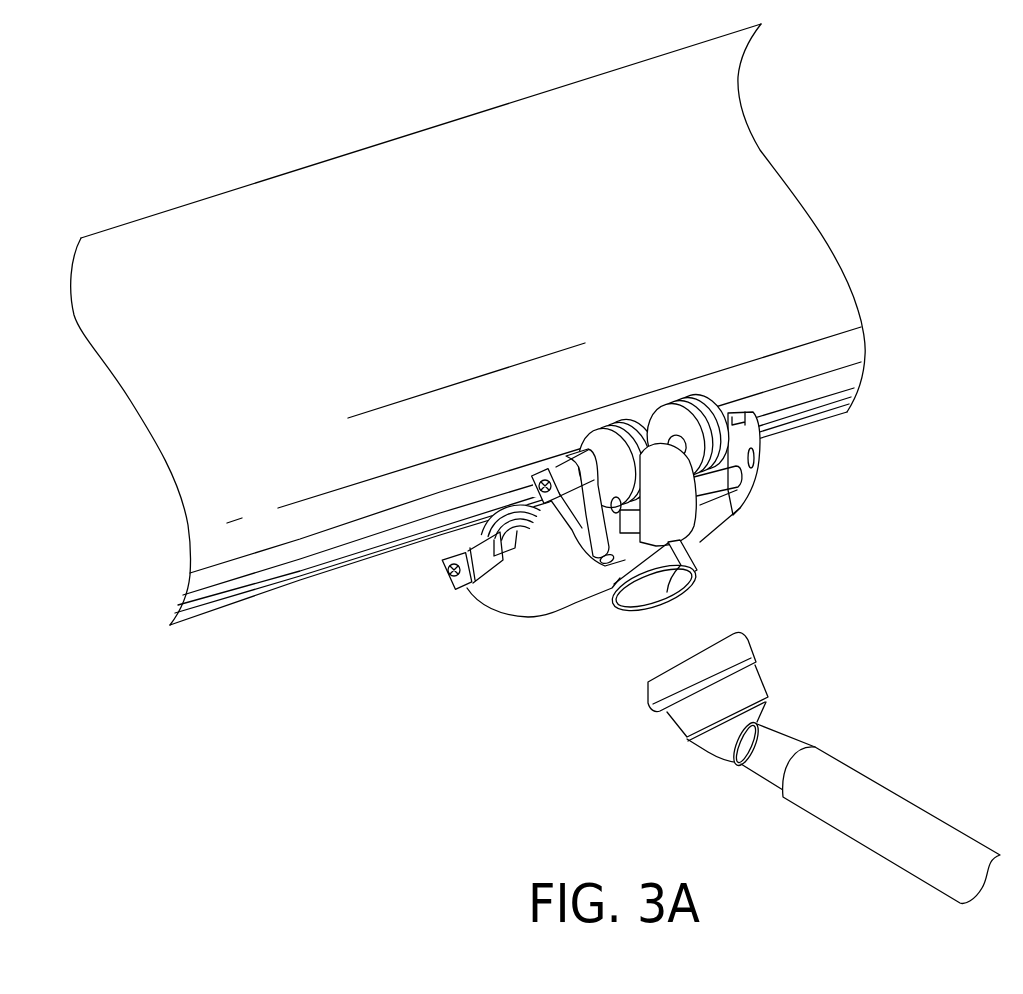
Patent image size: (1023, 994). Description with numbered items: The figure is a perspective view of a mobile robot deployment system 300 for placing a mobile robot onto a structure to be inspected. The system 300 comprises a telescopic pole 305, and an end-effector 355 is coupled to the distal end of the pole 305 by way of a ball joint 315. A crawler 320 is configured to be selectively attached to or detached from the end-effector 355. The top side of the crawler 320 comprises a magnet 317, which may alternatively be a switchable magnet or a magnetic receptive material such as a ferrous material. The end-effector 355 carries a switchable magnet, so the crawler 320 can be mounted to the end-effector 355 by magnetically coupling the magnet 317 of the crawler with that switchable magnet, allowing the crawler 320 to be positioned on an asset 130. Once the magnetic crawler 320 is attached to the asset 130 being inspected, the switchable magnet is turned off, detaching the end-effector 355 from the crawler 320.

The asset 130 is at (135, 220).
The mobile robot deployment system 300 is at (930, 438).
The crawler 320 is at (480, 603).
The magnet 317 is at (700, 590).
The end-effector 355 is at (653, 699).
The ball joint 315 is at (717, 758).
The telescopic pole 305 is at (892, 790).